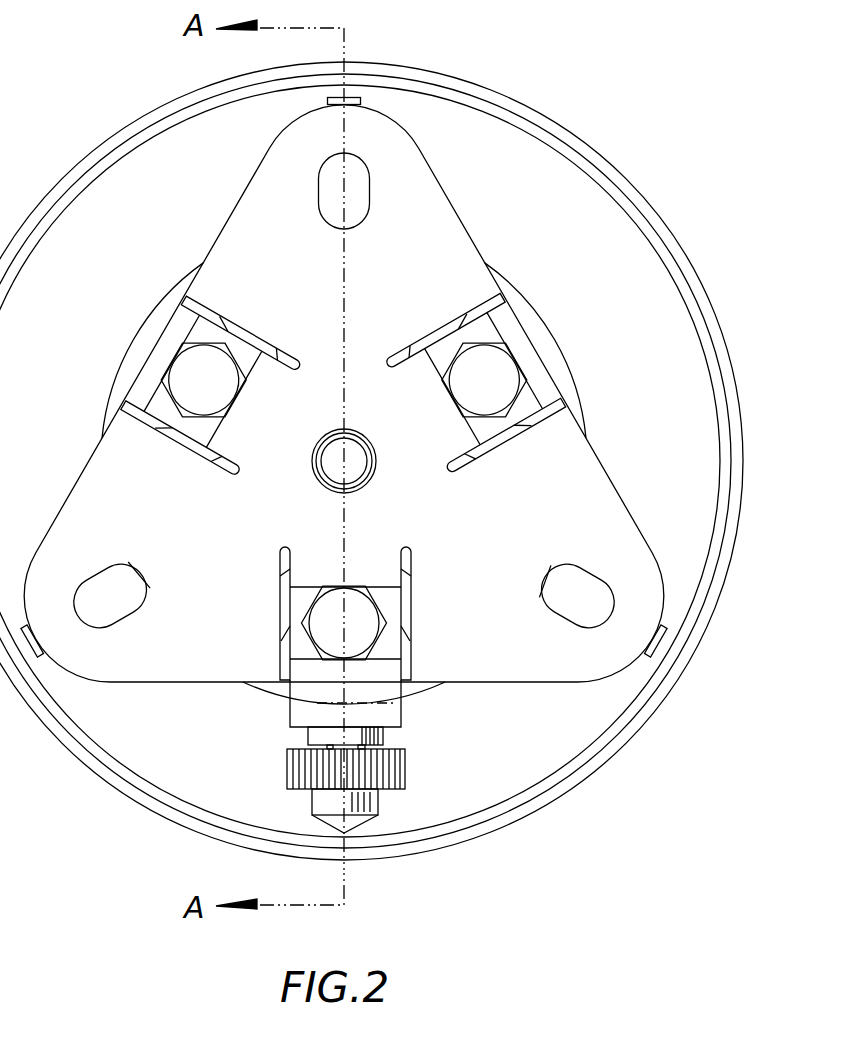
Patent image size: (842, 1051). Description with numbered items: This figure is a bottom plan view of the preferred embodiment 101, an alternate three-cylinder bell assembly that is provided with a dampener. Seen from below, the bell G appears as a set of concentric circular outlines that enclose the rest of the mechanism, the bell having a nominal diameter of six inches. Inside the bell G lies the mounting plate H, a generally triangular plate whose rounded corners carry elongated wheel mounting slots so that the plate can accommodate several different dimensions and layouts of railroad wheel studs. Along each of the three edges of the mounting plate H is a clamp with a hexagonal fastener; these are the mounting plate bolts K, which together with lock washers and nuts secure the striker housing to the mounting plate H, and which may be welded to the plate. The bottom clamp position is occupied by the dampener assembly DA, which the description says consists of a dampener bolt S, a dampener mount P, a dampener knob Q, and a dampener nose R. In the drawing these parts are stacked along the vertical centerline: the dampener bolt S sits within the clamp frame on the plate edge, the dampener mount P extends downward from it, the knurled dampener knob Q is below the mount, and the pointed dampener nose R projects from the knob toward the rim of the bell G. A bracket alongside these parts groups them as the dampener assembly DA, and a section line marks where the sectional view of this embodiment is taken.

The preferred embodiment 101 is at (563, 105).
The bell G is at (670, 375).
The mounting plate H is at (610, 668).
The mounting plate bolt K is at (498, 375).
The dampener bolt S is at (323, 613).
The dampener assembly DA is at (349, 672).
The dampener mount P is at (293, 717).
The dampener knob Q is at (285, 763).
The dampener nose R is at (360, 820).